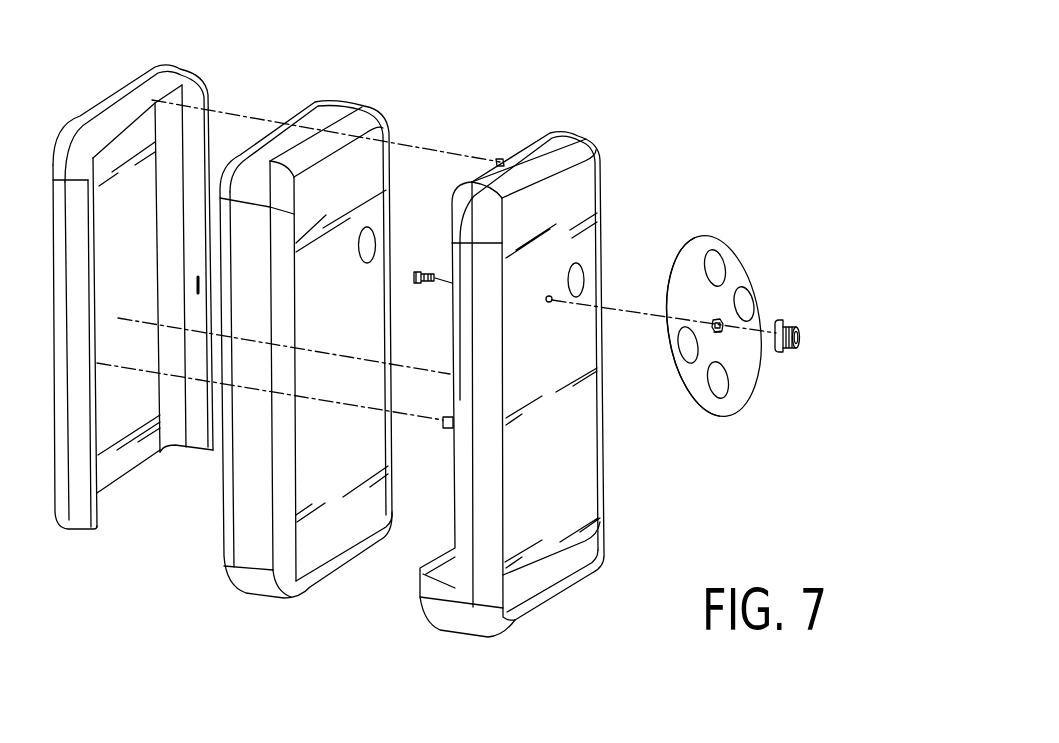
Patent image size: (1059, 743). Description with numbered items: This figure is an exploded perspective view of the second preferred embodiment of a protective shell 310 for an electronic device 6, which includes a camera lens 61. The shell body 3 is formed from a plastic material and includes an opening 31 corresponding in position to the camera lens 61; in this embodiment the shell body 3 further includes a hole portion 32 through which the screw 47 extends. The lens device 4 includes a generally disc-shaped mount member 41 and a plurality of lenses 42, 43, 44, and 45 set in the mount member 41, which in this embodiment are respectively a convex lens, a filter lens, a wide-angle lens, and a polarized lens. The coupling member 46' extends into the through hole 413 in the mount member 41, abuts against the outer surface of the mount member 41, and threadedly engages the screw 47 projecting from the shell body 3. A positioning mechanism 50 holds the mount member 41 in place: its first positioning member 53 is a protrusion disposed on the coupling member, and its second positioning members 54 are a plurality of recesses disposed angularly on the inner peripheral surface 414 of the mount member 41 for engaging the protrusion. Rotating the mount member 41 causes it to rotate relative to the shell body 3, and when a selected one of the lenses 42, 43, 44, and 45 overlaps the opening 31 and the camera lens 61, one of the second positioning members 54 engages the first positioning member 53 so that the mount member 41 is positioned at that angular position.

The protective shell 310 is at (615, 120).
The electronic device 6 is at (323, 311).
The camera lens 61 is at (366, 230).
The screw 47 is at (425, 270).
The shell body 3 is at (535, 363).
The opening 31 is at (586, 280).
The hole portion 32 is at (553, 302).
The lens device 4 is at (732, 317).
The mount member 41 is at (731, 368).
The lens 42 is at (745, 299).
The lens 43 is at (712, 256).
The lens 44 is at (686, 358).
The lens 45 is at (711, 392).
The second positioning member 54 is at (716, 318).
The through hole 413 is at (722, 312).
The inner peripheral surface 414 is at (716, 332).
The coupling member 46' is at (832, 356).
The first positioning member 53 is at (789, 326).
The positioning mechanism 50 is at (784, 352).